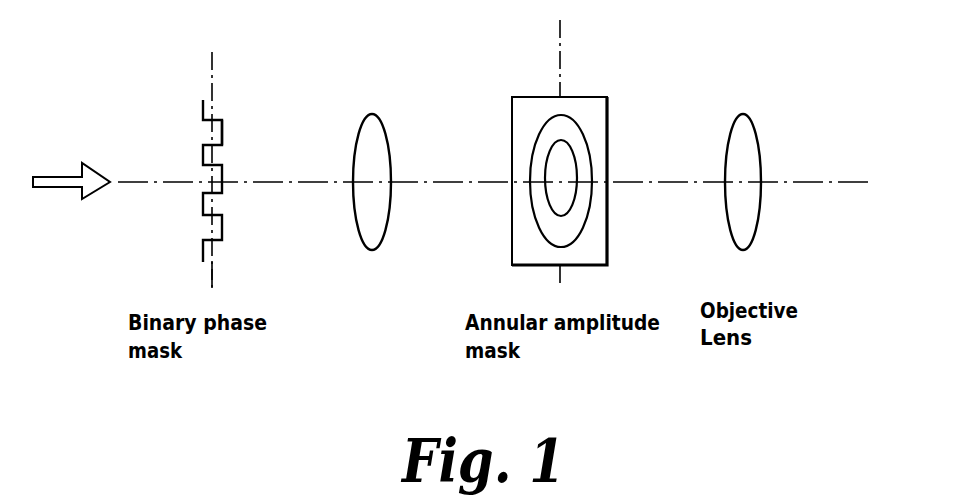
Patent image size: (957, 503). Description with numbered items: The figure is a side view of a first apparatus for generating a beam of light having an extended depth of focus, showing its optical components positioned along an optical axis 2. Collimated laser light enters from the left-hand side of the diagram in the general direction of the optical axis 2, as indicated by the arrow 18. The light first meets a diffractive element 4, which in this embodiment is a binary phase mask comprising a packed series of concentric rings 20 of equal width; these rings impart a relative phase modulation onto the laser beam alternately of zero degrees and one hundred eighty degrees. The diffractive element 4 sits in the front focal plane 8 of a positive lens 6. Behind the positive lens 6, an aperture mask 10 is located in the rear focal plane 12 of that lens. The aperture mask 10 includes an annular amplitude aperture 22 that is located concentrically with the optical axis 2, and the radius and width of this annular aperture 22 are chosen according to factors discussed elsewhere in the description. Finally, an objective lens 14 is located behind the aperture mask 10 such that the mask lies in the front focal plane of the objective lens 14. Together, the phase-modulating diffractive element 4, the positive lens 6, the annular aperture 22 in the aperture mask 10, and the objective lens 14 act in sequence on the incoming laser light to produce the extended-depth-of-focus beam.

The optical axis 2 is at (795, 180).
The diffractive element 4 is at (205, 108).
The positive lens 6 is at (383, 128).
The front focal plane 8 is at (213, 270).
The aperture mask 10 is at (543, 154).
The rear focal plane 12 is at (608, 154).
The objective lens 14 is at (745, 142).
The arrow 18 is at (71, 189).
The concentric rings 20 is at (207, 155).
The annular amplitude aperture 22 is at (547, 213).